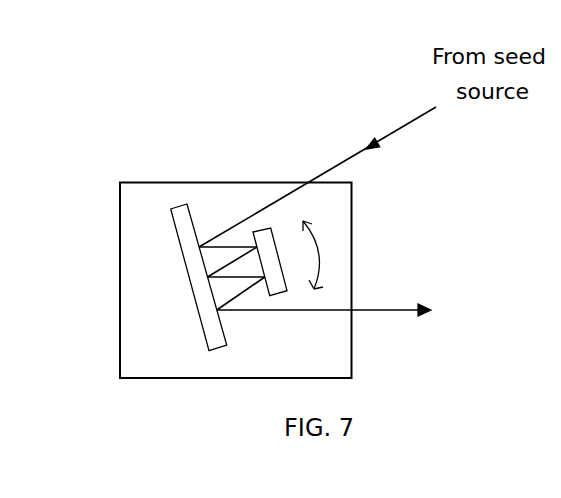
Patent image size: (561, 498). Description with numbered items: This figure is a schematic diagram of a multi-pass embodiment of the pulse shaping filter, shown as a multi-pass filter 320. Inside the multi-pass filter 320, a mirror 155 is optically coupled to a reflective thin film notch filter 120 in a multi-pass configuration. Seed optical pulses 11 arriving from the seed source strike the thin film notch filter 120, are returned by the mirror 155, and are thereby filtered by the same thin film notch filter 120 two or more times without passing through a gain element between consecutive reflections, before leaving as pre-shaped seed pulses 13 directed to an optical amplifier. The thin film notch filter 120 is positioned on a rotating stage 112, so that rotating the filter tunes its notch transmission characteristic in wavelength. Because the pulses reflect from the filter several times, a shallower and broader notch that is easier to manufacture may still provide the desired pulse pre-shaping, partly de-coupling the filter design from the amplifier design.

The multi-pass filter 320 is at (219, 138).
The rotating stage 112 is at (197, 366).
The reflective thin film notch filter 120 is at (172, 210).
The mirror 155 is at (264, 230).
The seed optical pulses 11 is at (345, 158).
The pre-shaped seed pulses 13 is at (410, 310).